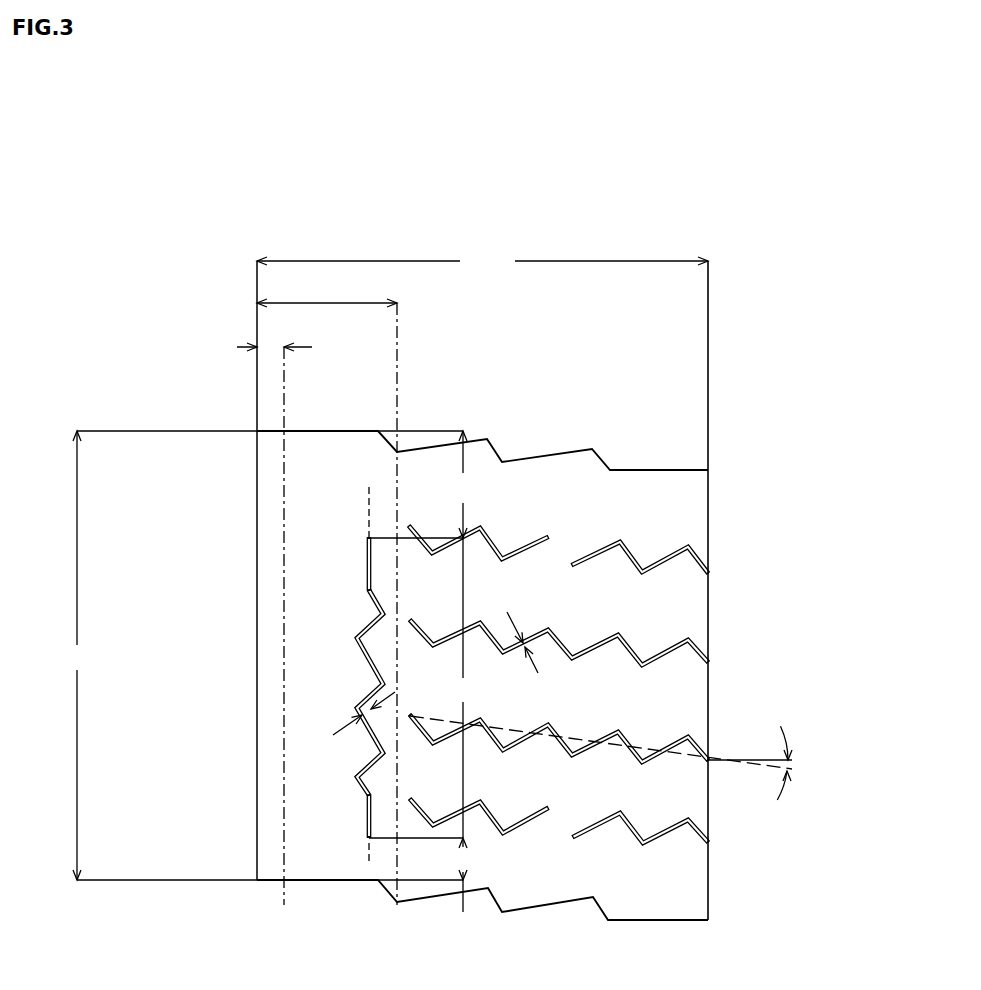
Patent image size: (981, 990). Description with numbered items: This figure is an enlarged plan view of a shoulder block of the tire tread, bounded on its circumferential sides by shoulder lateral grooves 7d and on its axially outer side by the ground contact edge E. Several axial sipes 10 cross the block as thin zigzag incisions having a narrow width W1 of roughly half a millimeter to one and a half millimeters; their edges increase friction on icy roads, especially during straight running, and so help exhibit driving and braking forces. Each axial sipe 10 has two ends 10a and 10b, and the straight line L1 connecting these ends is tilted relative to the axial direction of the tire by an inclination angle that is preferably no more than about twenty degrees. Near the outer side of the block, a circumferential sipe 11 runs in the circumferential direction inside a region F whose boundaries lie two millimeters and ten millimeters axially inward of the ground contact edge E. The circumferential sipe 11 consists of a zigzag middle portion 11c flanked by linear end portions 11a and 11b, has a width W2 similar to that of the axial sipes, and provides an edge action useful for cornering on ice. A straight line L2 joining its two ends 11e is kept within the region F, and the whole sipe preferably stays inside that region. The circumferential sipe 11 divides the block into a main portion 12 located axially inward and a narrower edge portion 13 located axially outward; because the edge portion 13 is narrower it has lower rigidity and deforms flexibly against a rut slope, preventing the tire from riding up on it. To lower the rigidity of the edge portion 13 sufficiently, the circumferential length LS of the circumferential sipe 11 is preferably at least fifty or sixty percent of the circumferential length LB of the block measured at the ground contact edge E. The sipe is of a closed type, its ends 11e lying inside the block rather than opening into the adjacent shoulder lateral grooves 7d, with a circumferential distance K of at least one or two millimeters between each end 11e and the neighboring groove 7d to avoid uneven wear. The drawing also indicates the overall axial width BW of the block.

The shoulder lateral groove 7d is at (572, 420).
The axial sipe 10 is at (494, 542).
The end of axial sipe 10a is at (410, 714).
The end of axial sipe 10b is at (708, 758).
The circumferential sipe 11 is at (241, 715).
The linear end portion 11a is at (367, 568).
The linear end portion 11b is at (367, 817).
The zigzag middle portion 11c is at (365, 662).
The end of circumferential sipe 11e is at (369, 537).
The main portion 12 is at (655, 602).
The edge portion 13 is at (305, 570).
The ground contact edge E is at (257, 527).
The region F is at (372, 456).
The straight line L1 is at (737, 770).
The straight line L2 is at (365, 508).
The circumferential length of circumferential sipe LS is at (462, 688).
The circumferential distance K is at (419, 671).
The circumferential length of shoulder block LB is at (262, 655).
The block width BW is at (482, 263).
The width of axial sipe W1 is at (530, 635).
The width of circumferential sipe W2 is at (347, 713).